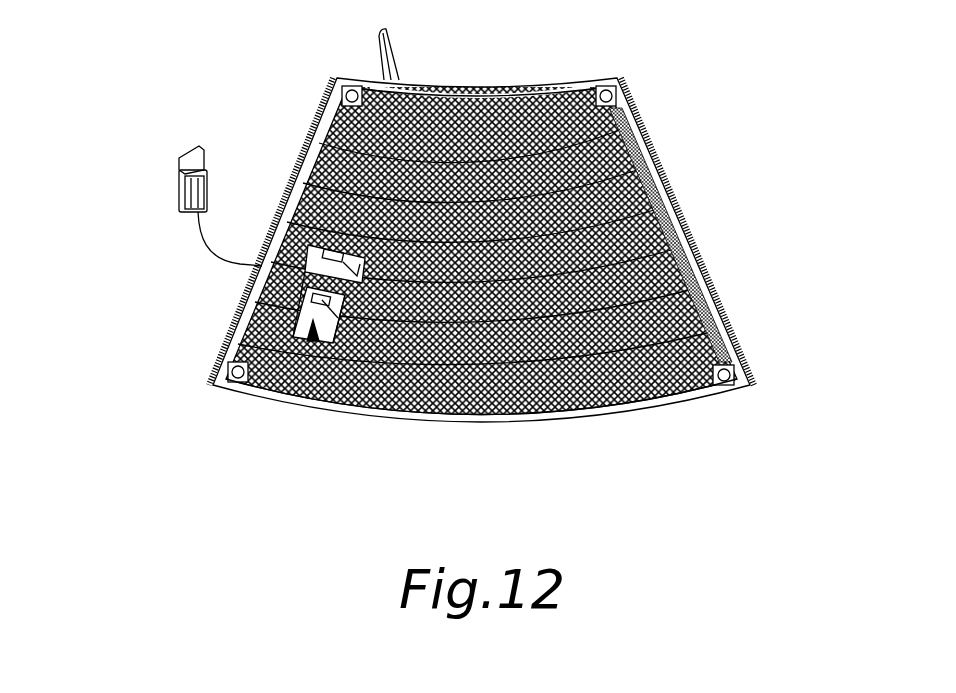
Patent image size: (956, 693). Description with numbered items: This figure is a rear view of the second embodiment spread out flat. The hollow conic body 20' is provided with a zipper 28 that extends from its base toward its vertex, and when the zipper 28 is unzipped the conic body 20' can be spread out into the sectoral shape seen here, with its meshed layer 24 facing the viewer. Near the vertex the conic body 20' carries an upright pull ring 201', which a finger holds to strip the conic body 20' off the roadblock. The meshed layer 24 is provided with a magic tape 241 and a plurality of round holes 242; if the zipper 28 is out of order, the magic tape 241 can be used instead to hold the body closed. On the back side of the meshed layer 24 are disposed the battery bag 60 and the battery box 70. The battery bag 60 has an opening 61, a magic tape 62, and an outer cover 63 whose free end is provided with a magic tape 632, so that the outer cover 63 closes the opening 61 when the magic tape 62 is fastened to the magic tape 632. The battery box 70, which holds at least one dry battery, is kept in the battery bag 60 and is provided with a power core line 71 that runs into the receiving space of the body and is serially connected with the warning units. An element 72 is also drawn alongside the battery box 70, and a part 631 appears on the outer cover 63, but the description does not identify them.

The hollow conic body 20' is at (481, 212).
The upright pull ring 201' is at (342, 41).
The round holes 242 is at (340, 80).
The zipper 28 is at (232, 332).
The magic tape 241 is at (702, 275).
The meshed layer 24 is at (616, 392).
The battery box 70 is at (179, 151).
The battery holder 72 is at (188, 190).
The power core line 71 is at (208, 243).
The outer cover 63 is at (280, 238).
The flap fastener 631 is at (304, 166).
The opening 61 is at (262, 288).
The battery bag 60 is at (313, 340).
The magic tape 62 is at (356, 335).
The magic tape 632 is at (372, 322).